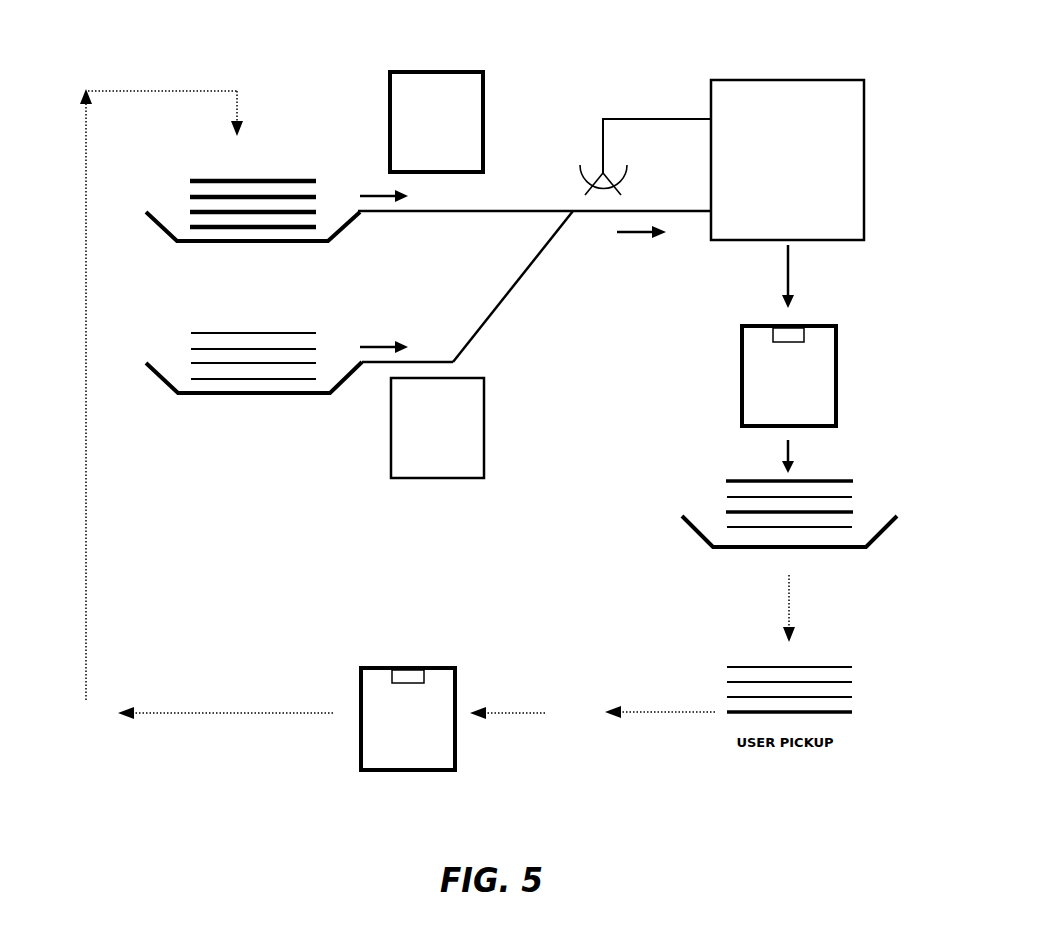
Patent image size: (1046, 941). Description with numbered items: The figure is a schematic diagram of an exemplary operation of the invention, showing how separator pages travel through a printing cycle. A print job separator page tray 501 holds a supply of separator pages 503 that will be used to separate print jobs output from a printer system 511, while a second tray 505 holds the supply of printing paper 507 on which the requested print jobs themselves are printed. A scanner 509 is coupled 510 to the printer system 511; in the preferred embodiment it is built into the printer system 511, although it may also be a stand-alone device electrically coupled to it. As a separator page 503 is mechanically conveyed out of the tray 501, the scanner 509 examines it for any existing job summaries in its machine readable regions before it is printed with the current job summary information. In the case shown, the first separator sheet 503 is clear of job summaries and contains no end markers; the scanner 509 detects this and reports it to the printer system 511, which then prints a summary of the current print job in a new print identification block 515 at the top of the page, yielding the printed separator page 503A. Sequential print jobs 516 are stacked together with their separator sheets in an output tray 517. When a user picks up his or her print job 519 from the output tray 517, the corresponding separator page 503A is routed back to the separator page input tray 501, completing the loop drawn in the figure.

The print job separator page tray 501 is at (180, 244).
The separator page 503 is at (483, 72).
The separator page with printed identification block 503A is at (836, 375).
The second input tray with paper stack 505 is at (180, 397).
The printing paper 507 is at (484, 401).
The scanner 509 is at (567, 152).
The coupling 510 is at (648, 118).
The printer system 511 is at (750, 80).
The print identification block 515 is at (790, 340).
The sequential print jobs 516 is at (688, 482).
The output tray 517 is at (683, 524).
The print job 519 is at (714, 666).